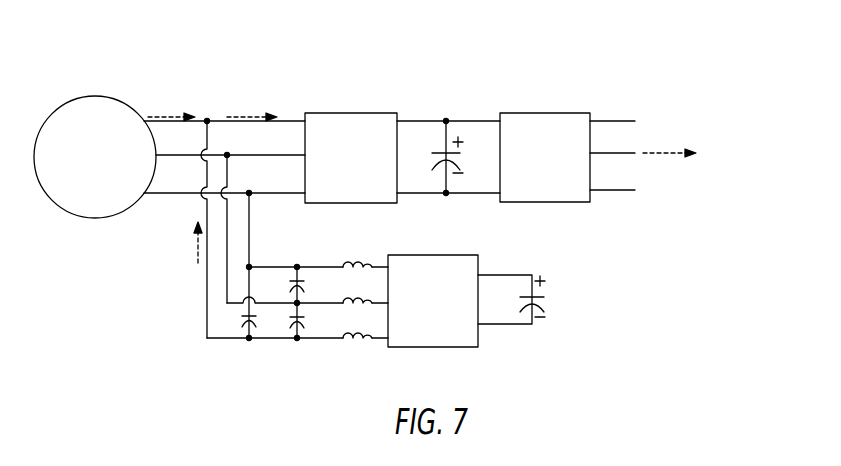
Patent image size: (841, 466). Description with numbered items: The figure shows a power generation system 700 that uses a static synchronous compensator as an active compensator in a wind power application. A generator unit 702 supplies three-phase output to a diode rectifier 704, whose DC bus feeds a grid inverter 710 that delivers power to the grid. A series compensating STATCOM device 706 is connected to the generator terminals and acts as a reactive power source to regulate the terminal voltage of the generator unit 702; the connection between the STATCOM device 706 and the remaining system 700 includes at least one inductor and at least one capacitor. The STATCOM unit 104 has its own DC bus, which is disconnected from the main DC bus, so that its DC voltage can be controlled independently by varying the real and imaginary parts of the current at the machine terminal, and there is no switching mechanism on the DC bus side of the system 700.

The power generation system 700 is at (278, 77).
The generator unit 702 is at (82, 96).
The diode rectifier 704 is at (397, 119).
The grid inverter 710 is at (533, 203).
The STATCOM 104 is at (433, 285).
The STATCOM device 706 is at (359, 255).